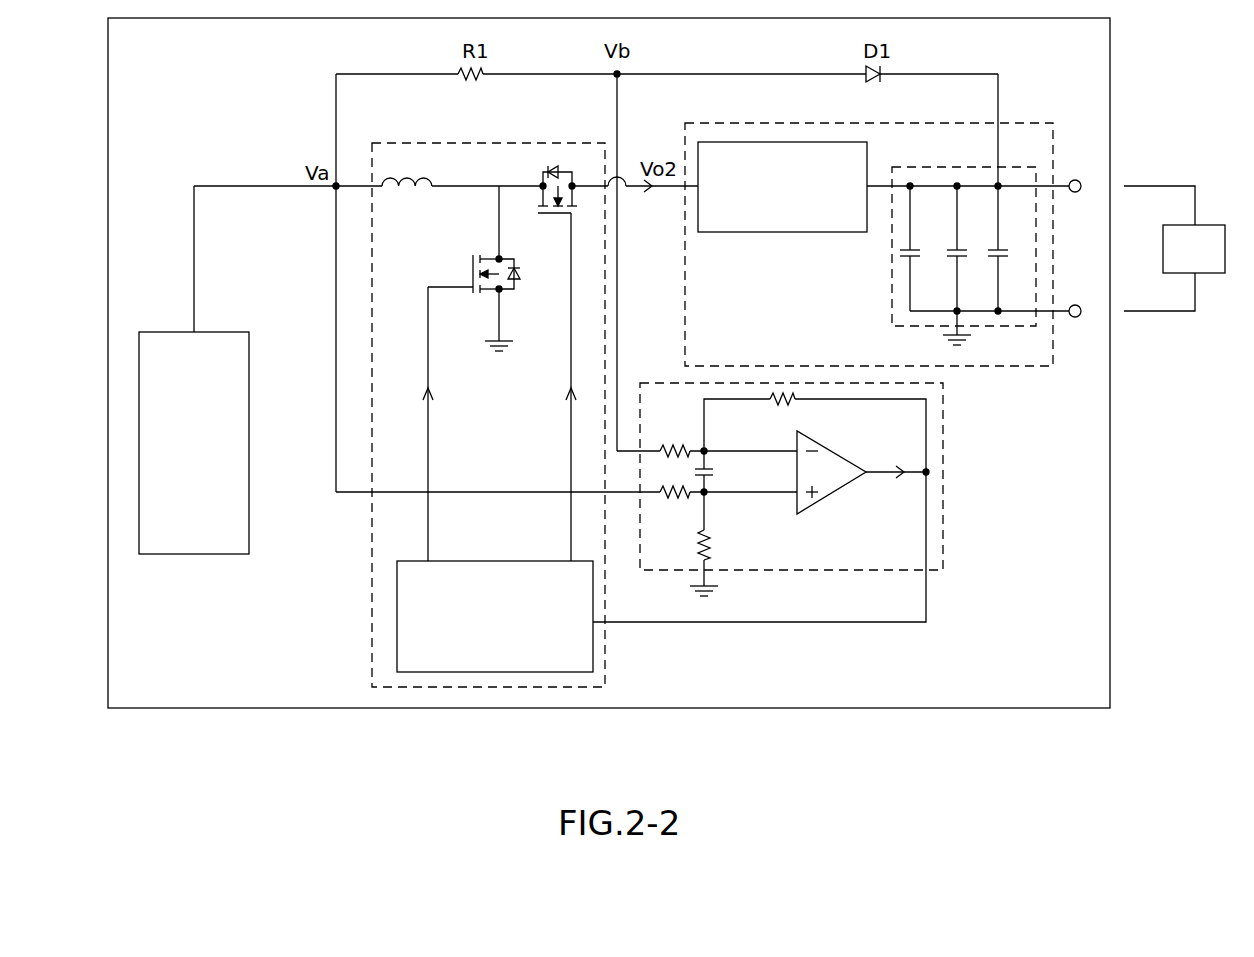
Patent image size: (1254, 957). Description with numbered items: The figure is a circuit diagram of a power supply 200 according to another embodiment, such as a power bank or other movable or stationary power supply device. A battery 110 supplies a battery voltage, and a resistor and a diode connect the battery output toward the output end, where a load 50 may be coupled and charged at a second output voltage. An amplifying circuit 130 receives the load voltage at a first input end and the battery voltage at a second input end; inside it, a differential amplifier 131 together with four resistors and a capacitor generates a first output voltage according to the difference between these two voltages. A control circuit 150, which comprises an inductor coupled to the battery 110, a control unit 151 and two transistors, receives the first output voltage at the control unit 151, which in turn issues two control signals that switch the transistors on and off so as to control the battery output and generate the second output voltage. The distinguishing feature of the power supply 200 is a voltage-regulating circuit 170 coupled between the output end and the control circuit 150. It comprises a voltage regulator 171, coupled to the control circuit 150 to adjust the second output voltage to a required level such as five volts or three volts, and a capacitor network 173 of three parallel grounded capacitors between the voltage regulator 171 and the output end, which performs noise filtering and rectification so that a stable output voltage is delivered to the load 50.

The power supply 200 is at (1110, 660).
The battery 110 is at (139, 478).
The control circuit 150 is at (415, 140).
The control unit 151 is at (593, 647).
The voltage-regulating circuit 170 is at (1053, 123).
The voltage regulator 171 is at (782, 232).
The capacitor network 173 is at (1036, 167).
The amplifying circuit 130 is at (945, 500).
The differential amplifier 131 is at (830, 458).
The load 50 is at (1212, 225).